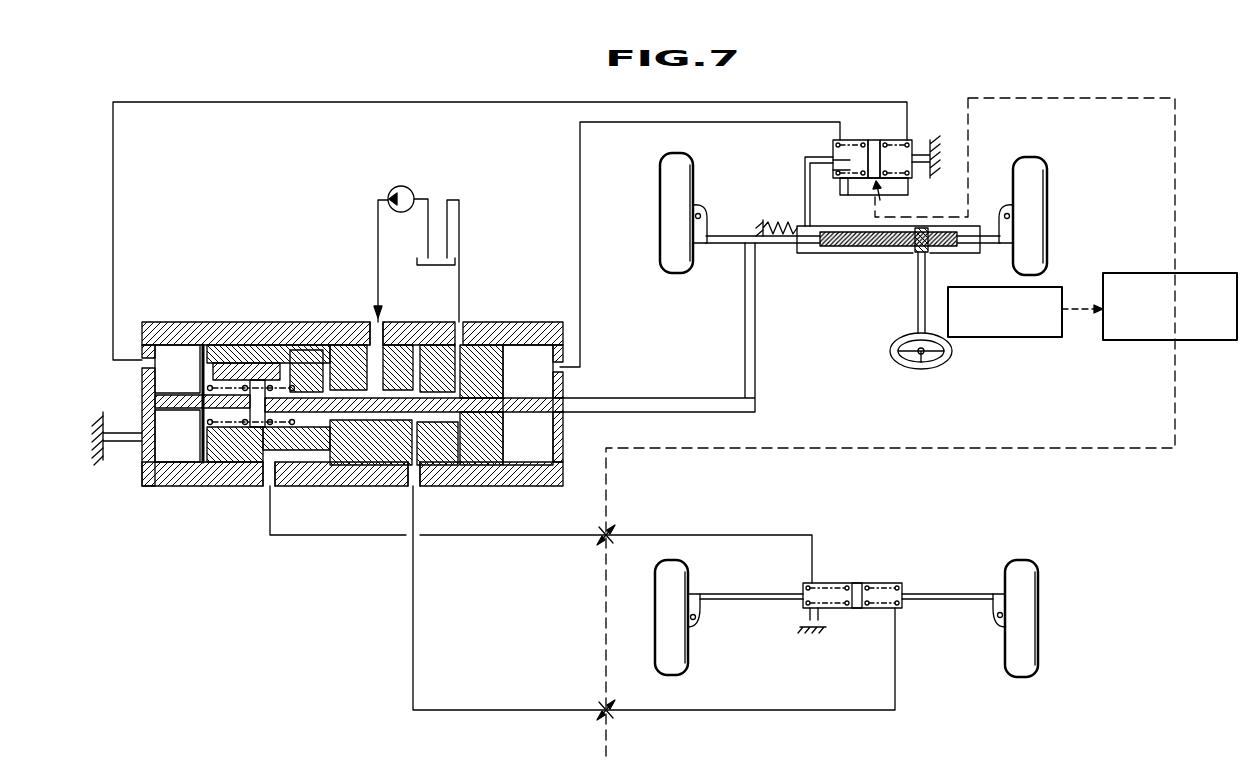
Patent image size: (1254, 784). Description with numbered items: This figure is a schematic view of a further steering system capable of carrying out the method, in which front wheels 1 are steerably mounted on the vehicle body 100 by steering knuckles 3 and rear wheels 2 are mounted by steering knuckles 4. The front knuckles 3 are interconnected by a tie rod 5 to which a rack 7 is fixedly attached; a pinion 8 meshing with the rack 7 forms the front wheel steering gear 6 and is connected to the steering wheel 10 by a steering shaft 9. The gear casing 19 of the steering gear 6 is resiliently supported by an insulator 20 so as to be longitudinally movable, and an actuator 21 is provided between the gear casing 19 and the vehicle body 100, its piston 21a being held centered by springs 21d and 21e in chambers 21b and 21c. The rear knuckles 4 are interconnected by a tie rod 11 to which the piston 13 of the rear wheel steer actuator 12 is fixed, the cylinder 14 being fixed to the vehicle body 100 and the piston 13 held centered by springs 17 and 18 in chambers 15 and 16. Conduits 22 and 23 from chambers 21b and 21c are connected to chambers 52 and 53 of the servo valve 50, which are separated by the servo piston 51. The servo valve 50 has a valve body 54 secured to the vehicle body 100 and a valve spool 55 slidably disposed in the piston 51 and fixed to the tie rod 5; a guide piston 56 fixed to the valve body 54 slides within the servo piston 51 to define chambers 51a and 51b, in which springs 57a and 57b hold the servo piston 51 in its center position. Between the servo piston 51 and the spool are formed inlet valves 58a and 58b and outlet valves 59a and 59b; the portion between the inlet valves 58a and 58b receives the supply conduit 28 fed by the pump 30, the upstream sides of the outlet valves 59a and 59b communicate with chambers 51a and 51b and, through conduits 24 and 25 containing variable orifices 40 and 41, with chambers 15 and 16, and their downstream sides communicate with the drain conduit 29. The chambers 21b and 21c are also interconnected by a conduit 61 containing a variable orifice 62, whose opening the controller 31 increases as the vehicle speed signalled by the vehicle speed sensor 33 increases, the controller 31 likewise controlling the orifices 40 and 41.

The front wheel 1 is at (657, 232).
The rear wheel 2 is at (655, 646).
The steering knuckle 3 is at (699, 207).
The steering knuckle 4 is at (703, 613).
The tie rod 5 is at (730, 244).
The front wheel steering gear 6 is at (822, 258).
The rack 7 is at (883, 247).
The pinion 8 is at (938, 242).
The steering shaft 9 is at (918, 302).
The steering wheel 10 is at (947, 361).
The tie rod 11 is at (744, 594).
The actuator 12 is at (880, 583).
The piston 13 is at (863, 585).
The cylinder 14 is at (847, 610).
The chamber 15 is at (823, 583).
The chamber 16 is at (897, 583).
The spring 17 is at (838, 587).
The spring 18 is at (882, 578).
The gear casing 19 is at (833, 223).
The insulator 20 is at (783, 223).
The actuator 21 is at (860, 157).
The piston 21a is at (874, 140).
The chamber 21b is at (833, 141).
The chamber 21c is at (900, 160).
The spring 21d is at (833, 173).
The spring 21e is at (900, 185).
The conduit 22 is at (777, 122).
The conduit 23 is at (833, 100).
The conduit 24 is at (737, 535).
The conduit 25 is at (743, 711).
The supply conduit 28 is at (378, 217).
The drain conduit 29 is at (460, 215).
The pump 30 is at (403, 186).
The controller 31 is at (1193, 274).
The vehicle speed sensor 33 is at (1033, 331).
The variable orifice 40 is at (606, 548).
The variable orifice 41 is at (608, 718).
The servo valve 50 is at (177, 492).
The servo piston 51 is at (470, 452).
The chamber 51a is at (240, 380).
The chamber 51b is at (275, 380).
The chamber 52 is at (523, 352).
The chamber 53 is at (172, 350).
The valve body 54 is at (370, 487).
The valve spool 55 is at (343, 470).
The guide piston 56 is at (257, 427).
The spring 57a is at (215, 384).
The spring 57b is at (281, 470).
The inlet valve 58a is at (350, 320).
The inlet valve 58b is at (403, 385).
The outlet valve 59a is at (343, 388).
The outlet valve 59b is at (423, 383).
The conduit 61 is at (853, 194).
The variable orifice 62 is at (881, 193).
The vehicle body 100 is at (100, 460).